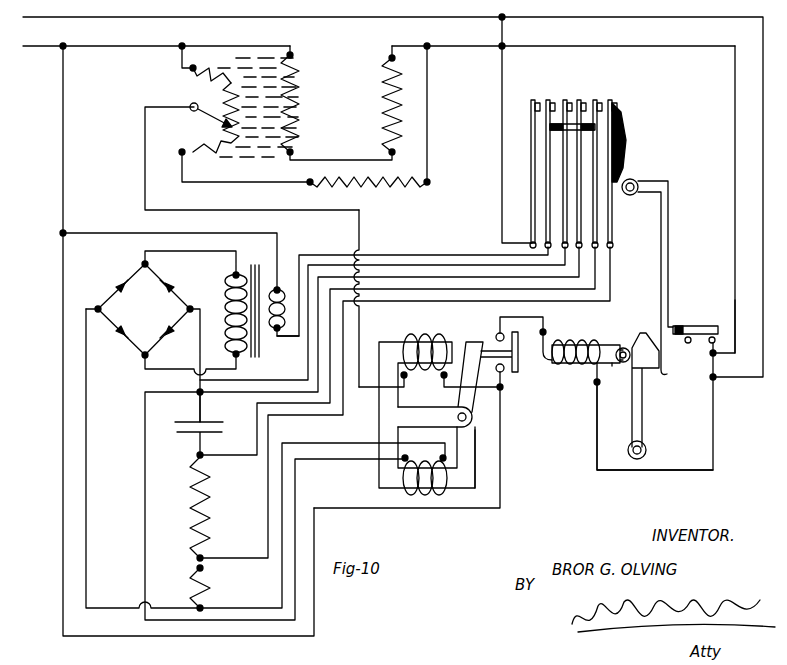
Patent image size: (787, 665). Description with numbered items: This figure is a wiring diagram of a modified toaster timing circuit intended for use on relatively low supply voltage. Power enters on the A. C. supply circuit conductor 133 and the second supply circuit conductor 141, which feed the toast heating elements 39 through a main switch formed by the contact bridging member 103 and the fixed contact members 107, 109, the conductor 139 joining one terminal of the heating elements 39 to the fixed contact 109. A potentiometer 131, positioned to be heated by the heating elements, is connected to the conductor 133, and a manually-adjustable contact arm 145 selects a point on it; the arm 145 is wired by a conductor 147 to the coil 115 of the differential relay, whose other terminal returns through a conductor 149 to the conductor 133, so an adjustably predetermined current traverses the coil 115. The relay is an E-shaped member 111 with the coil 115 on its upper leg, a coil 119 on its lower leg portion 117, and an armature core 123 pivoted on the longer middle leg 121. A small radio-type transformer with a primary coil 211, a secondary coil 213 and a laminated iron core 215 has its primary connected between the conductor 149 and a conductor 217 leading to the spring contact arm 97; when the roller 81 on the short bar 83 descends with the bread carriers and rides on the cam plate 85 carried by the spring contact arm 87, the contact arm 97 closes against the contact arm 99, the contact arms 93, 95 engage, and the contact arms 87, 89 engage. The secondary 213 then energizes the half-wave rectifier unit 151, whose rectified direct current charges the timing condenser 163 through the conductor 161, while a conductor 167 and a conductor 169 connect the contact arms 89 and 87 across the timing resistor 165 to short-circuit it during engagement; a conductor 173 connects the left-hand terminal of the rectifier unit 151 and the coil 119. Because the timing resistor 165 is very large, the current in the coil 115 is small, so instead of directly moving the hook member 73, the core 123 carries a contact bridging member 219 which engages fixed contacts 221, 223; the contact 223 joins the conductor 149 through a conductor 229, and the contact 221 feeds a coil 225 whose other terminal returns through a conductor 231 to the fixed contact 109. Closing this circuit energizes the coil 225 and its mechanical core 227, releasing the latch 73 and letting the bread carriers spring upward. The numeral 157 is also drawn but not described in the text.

The second supply circuit conductor 141 is at (38, 17).
The lower leg portion 117 is at (393, 188).
The coil 119 is at (407, 500).
The A. C. supply circuit conductor 133 is at (376, 57).
The conductor 149 is at (63, 155).
The conductor 147 is at (145, 155).
The potentiometer 131 is at (207, 73).
The manually-adjustable contact arm 145 is at (203, 113).
The toast heating elements 39 is at (380, 137).
The conductor 157 is at (502, 175).
The spring contact arm 99 is at (533, 100).
The spring contact arm 97 is at (548, 100).
The spring contact arm 95 is at (565, 100).
The spring contact arm 93 is at (579, 100).
The spring contact arm 89 is at (596, 100).
The spring contact arm 87 is at (614, 103).
The cam plate 85 is at (626, 139).
The roller 81 is at (638, 180).
The short bar 83 is at (665, 181).
The conductor 139 is at (735, 225).
The fixed contact member 109 is at (731, 320).
The contact bridging member 103 is at (697, 326).
The fixed contact member 107 is at (688, 344).
The hook member 73 is at (643, 333).
The conductor 231 is at (620, 470).
The coil 225 is at (581, 347).
The mechanical core 227 is at (612, 366).
The fixed contact 221 is at (498, 334).
The fixed contact 223 is at (503, 372).
The conductor 229 is at (500, 495).
The contact bridging member 219 is at (520, 364).
The E-shaped member 111 is at (379, 410).
The middle leg 121 is at (419, 405).
The coil 115 is at (411, 334).
The armature core 123 is at (476, 462).
The conductor 217 is at (389, 255).
The conductor 161 is at (484, 277).
The conductor 167 is at (597, 267).
The conductor 169 is at (612, 289).
The conductor 173 is at (86, 523).
The rectifier unit 151 is at (148, 326).
The secondary coil 213 is at (228, 282).
The laminated iron core 215 is at (258, 265).
The primary coil 211 is at (280, 334).
The timing condenser 163 is at (186, 425).
The timing resistor 165 is at (190, 522).